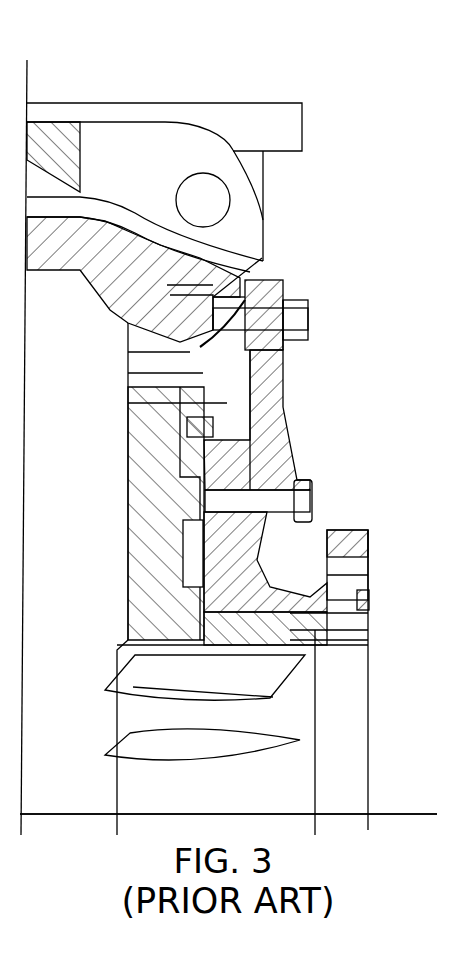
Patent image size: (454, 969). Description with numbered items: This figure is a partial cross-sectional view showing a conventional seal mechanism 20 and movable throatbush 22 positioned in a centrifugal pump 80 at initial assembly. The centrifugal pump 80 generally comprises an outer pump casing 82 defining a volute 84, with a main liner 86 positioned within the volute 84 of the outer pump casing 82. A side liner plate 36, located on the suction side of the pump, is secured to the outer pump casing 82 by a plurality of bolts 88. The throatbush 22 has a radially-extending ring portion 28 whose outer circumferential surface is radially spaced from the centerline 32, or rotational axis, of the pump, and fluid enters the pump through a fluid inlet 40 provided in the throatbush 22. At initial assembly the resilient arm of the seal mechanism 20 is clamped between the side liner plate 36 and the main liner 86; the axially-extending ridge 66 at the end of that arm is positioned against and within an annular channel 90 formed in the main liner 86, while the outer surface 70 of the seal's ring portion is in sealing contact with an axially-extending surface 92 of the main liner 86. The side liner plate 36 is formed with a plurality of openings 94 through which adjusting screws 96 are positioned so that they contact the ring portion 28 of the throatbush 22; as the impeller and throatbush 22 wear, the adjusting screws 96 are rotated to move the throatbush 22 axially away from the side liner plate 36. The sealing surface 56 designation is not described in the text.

The centrifugal pump 80 is at (178, 95).
The outer pump casing 82 is at (249, 113).
The volute 84 is at (79, 206).
The main liner 86 is at (150, 318).
The bolts 88 is at (292, 300).
The annular channel 90 is at (260, 262).
The axially-extending ridge 66 is at (200, 347).
The seal 56 is at (200, 372).
The outer surface 70 is at (143, 390).
The side liner plate 36 is at (283, 368).
The axially-extending surface 92 is at (213, 407).
The seal mechanism 20 is at (123, 402).
The ring portion 28 is at (127, 532).
The adjusting screws 96 is at (278, 500).
The openings 94 is at (305, 535).
The throatbush 22 is at (116, 617).
The fluid inlet 40 is at (302, 723).
The centerline 32 is at (383, 812).